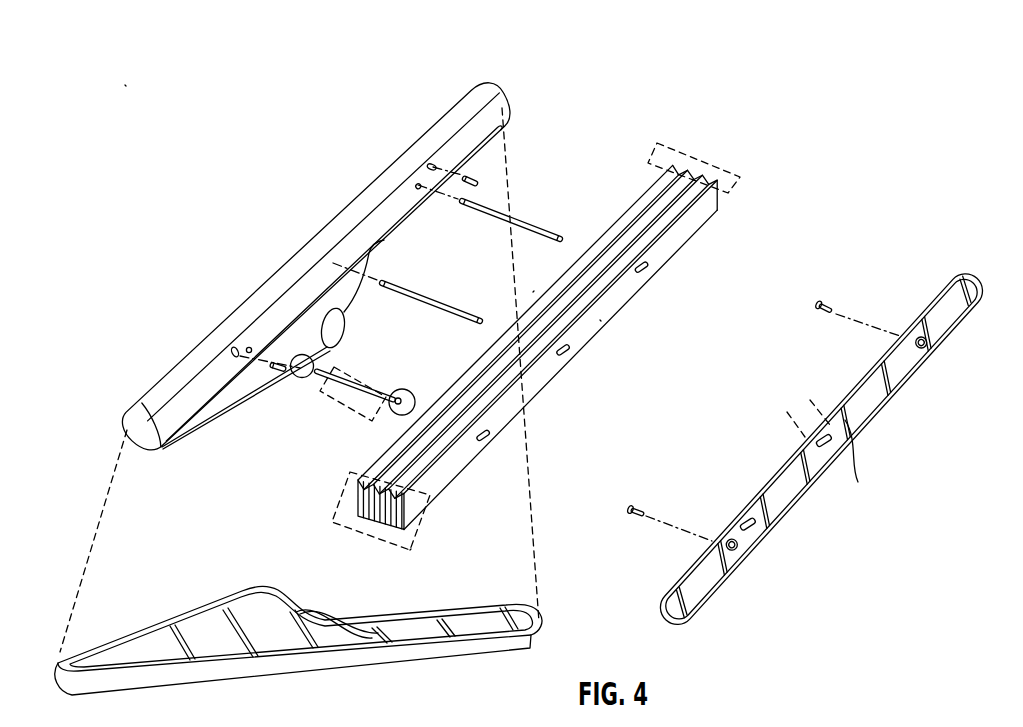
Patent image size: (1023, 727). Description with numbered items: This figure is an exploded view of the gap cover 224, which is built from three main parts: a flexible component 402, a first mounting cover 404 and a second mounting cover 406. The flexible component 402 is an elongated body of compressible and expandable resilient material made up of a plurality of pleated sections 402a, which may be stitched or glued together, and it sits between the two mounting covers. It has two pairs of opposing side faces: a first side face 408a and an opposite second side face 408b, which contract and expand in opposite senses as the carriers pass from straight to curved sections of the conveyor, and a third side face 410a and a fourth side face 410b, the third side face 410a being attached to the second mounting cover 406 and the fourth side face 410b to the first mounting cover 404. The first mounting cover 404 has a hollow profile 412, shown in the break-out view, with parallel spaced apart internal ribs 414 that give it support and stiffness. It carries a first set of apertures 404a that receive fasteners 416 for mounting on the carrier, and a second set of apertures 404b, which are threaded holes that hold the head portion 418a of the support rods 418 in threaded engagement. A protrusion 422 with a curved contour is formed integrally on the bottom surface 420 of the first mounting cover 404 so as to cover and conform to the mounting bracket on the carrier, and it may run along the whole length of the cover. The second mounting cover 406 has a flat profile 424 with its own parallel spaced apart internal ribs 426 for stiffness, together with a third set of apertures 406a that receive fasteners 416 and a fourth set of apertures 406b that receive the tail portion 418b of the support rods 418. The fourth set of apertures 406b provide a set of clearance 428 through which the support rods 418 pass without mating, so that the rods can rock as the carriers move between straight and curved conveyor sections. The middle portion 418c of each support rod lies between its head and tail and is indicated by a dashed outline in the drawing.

The gap cover 224 is at (618, 80).
The flexible component 402 is at (691, 148).
The pleated sections 402a is at (358, 503).
The first mounting cover 404 is at (362, 173).
The first set of apertures 404a is at (229, 347).
The second set of apertures 404b is at (252, 343).
The second mounting cover 406 is at (921, 310).
The third set of apertures 406a is at (929, 345).
The fourth set of apertures 406b is at (752, 519).
The first side face 408a is at (450, 555).
The second side face 408b is at (739, 183).
The third side face 410a is at (592, 320).
The fourth side face 410b is at (533, 292).
The hollow profile 412 is at (262, 627).
The internal ribs 414 is at (312, 630).
The fasteners 416 is at (277, 372).
The support rods 418 is at (364, 378).
The head portion 418a is at (300, 351).
The tail portion 418b is at (415, 402).
The rod middle portion 418c is at (347, 412).
The bottom surface 420 is at (478, 153).
The protrusion 422 is at (260, 392).
The flat profile 424 is at (787, 487).
The internal ribs 426 is at (822, 477).
The set of clearance 428 is at (811, 404).